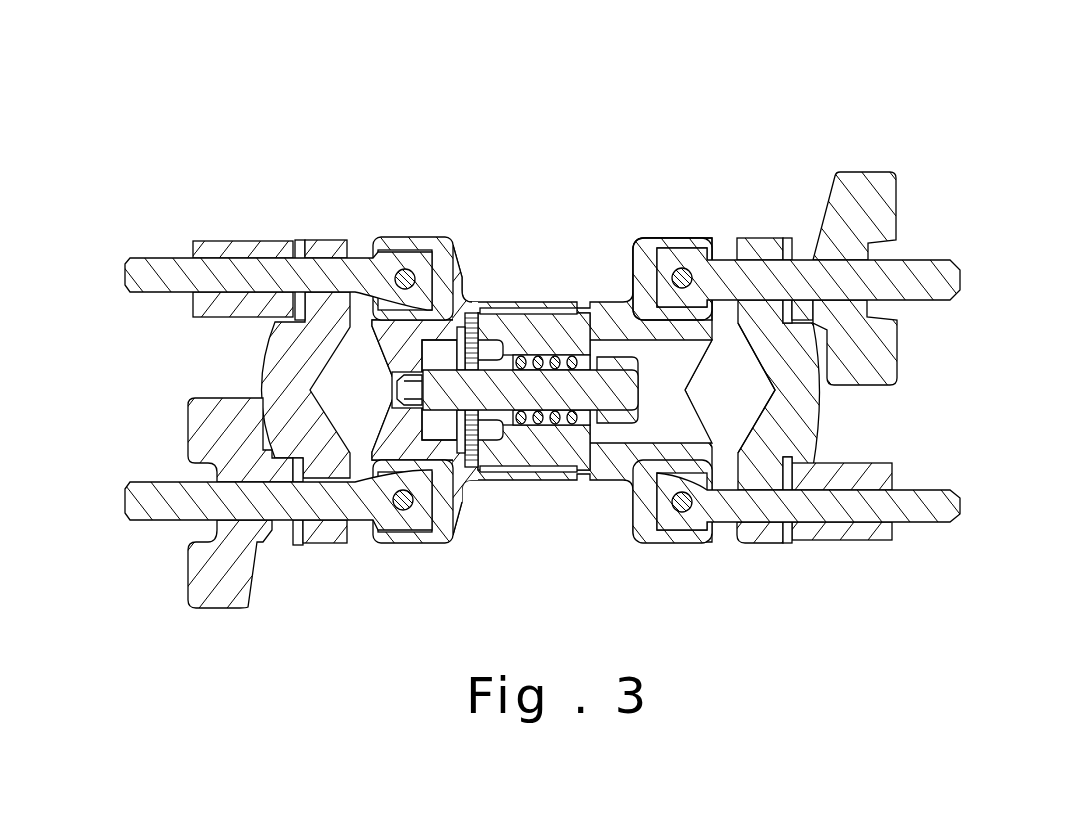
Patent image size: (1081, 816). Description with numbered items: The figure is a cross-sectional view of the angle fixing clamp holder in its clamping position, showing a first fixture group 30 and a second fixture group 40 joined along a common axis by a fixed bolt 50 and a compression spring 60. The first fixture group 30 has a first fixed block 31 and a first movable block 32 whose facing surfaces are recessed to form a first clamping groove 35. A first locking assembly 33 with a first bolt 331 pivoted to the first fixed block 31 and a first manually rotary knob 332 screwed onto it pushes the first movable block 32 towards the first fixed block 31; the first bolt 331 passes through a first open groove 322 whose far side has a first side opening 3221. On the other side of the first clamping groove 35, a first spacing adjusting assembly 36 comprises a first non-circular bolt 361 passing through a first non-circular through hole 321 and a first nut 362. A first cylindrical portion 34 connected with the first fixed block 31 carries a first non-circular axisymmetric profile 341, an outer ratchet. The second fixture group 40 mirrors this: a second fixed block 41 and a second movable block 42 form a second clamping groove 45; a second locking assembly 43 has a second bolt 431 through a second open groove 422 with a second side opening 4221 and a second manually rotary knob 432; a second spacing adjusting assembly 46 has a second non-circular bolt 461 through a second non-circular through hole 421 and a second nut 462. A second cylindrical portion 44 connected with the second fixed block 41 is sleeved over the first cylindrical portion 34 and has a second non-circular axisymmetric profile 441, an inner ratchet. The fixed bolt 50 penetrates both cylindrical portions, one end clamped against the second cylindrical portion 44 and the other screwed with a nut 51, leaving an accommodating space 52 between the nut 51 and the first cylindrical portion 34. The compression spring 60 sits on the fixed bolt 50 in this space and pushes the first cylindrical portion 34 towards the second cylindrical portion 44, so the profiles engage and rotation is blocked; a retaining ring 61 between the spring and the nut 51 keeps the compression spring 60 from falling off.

The first fixture group 30 is at (860, 152).
The first fixed block 31 is at (682, 240).
The first movable block 32 is at (763, 386).
The first non-circular through hole 321 is at (780, 510).
The first open groove 322 is at (773, 253).
The first side opening 3221 is at (748, 238).
The first locking assembly 33 is at (896, 239).
The first bolt 331 is at (945, 270).
The first manually rotary knob 332 is at (885, 208).
The first cylindrical portion 34 is at (555, 455).
The first non-circular axisymmetric profile 341 is at (528, 377).
The first clamping groove 35 is at (738, 410).
The first spacing adjusting assembly 36 is at (861, 517).
The first non-circular bolt 361 is at (950, 505).
The first nut 362 is at (885, 478).
The second fixture group 40 is at (365, 160).
The second fixed block 41 is at (455, 250).
The second movable block 42 is at (353, 234).
The second non-circular through hole 421 is at (322, 238).
The second open groove 422 is at (329, 564).
The second side opening 4221 is at (320, 535).
The second locking assembly 43 is at (176, 510).
The second bolt 431 is at (160, 490).
The second manually rotary knob 432 is at (215, 567).
The second cylindrical portion 44 is at (523, 307).
The second non-circular axisymmetric profile 441 is at (460, 440).
The second clamping groove 45 is at (345, 385).
The second spacing adjusting assembly 46 is at (184, 256).
The second non-circular bolt 461 is at (150, 262).
The second nut 462 is at (200, 307).
The fixed bolt 50 is at (440, 420).
The nut 51 is at (632, 360).
The accommodating space 52 is at (550, 355).
The compression spring 60 is at (554, 386).
The retaining ring 61 is at (600, 440).